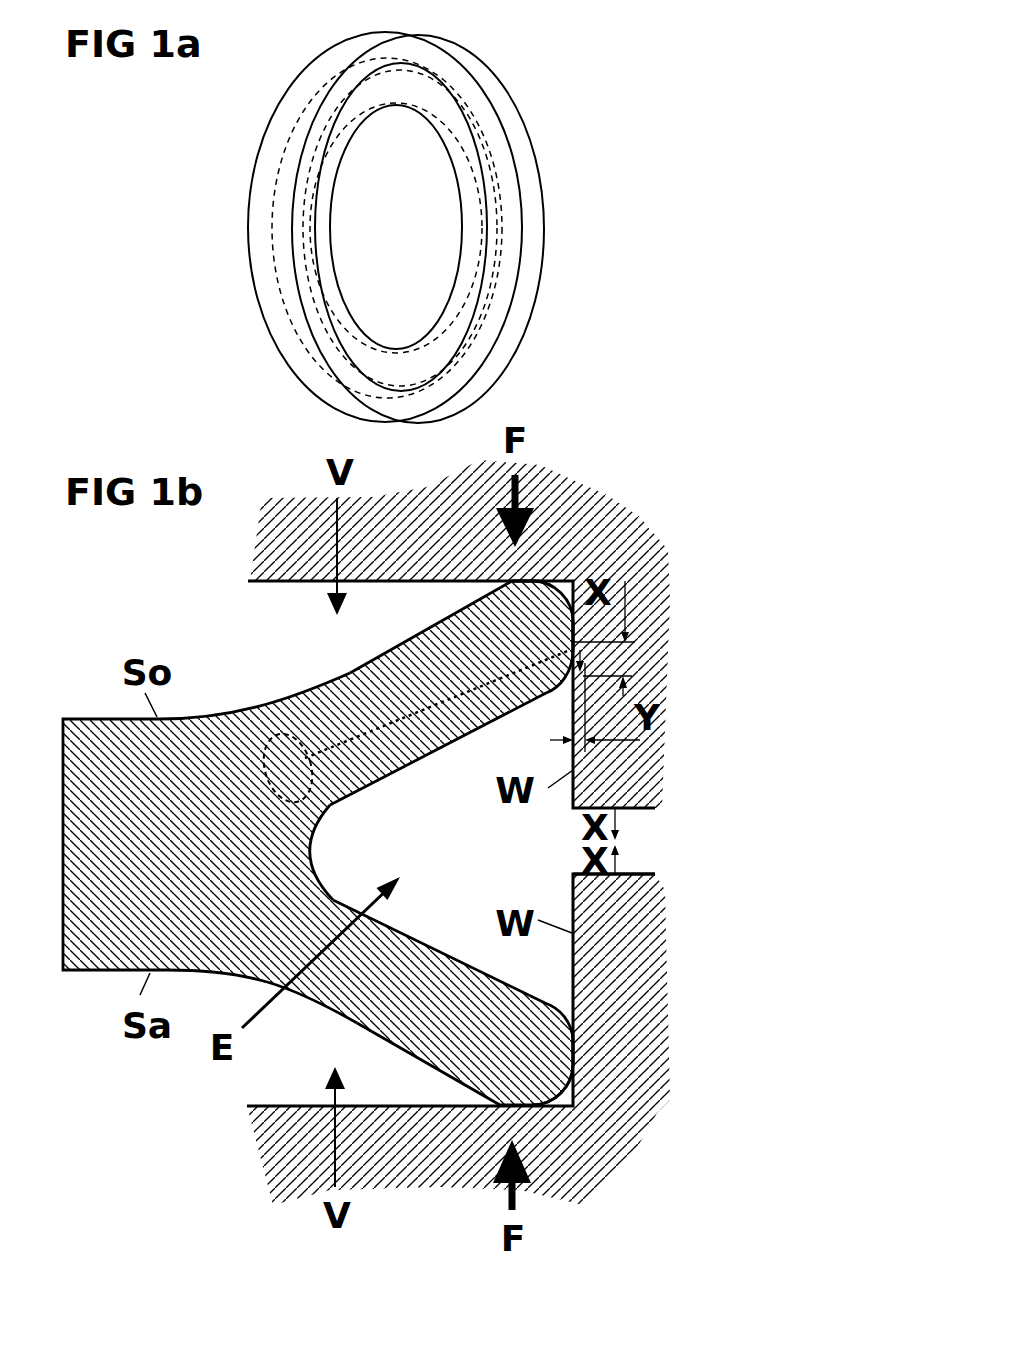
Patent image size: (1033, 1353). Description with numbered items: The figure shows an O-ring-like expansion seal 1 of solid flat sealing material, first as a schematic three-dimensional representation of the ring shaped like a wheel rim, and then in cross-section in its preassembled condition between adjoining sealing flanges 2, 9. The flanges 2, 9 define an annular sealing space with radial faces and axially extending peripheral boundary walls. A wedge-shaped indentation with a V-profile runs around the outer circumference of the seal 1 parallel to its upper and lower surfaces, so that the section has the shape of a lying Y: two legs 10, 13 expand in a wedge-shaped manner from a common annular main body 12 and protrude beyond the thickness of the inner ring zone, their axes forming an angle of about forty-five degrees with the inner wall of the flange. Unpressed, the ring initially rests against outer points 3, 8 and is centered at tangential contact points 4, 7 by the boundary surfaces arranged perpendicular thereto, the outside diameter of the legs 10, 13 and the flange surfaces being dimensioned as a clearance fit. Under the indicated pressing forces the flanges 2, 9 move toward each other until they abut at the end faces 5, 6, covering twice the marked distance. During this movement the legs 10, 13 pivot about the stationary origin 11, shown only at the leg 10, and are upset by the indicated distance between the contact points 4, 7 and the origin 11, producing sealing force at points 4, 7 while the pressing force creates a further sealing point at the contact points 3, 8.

In FIG. 1A, the expansion seal 1 is at (548, 229).
In FIG. 1B, the sealing flange 2 is at (560, 505).
In FIG. 1B, the outer point 3 is at (533, 580).
In FIG. 1B, the tangential contact point 4 is at (575, 644).
In FIG. 1B, the end face 5 is at (575, 777).
In FIG. 1B, the end face 6 is at (615, 874).
In FIG. 1B, the tangential contact point 7 is at (573, 1037).
In FIG. 1B, the outer point 8 is at (575, 1075).
In FIG. 1B, the sealing flange 9 is at (603, 1125).
In FIG. 1B, the leg 10 is at (345, 680).
In FIG. 1B, the stationary origin 11 is at (290, 770).
In FIG. 1B, the annular main body 12 is at (318, 843).
In FIG. 1B, the leg 13 is at (348, 993).